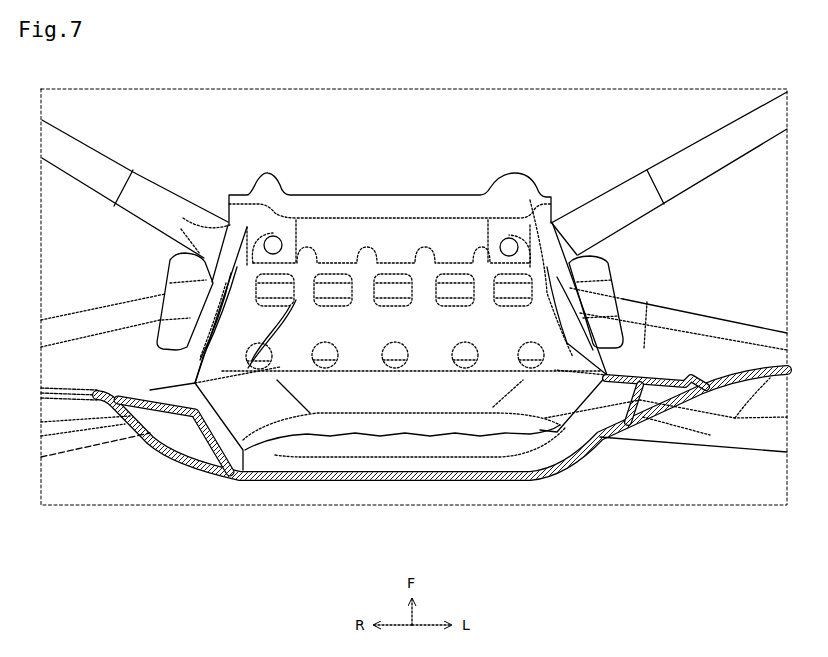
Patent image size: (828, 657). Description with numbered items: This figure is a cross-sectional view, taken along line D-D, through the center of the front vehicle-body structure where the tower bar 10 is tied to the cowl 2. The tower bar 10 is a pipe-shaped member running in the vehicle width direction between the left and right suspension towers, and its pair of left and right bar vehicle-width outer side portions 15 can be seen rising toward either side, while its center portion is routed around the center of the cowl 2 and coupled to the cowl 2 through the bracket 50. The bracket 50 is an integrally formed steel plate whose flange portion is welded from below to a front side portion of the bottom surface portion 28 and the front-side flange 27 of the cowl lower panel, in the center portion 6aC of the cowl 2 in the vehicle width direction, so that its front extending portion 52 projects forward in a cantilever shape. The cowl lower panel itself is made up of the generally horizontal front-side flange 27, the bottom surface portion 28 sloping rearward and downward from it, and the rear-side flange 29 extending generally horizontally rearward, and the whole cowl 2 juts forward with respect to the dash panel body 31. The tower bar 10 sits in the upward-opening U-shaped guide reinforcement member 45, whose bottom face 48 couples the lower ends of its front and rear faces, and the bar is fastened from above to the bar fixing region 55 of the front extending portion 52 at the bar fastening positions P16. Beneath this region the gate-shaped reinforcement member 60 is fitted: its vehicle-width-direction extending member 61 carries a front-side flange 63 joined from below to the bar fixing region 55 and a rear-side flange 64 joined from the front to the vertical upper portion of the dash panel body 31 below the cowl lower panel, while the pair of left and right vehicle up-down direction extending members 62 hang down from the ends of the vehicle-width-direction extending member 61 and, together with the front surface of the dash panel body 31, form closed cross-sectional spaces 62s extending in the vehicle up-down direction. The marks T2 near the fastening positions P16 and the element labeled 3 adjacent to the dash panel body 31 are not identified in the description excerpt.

The cowl 2 is at (712, 310).
The front cross member 3 is at (387, 486).
The center portion of the windshield lower edge 6aC is at (410, 165).
The tower bar 10 is at (121, 166).
The bar vehicle-width outer side portions 15 is at (70, 137).
The front-side flange 27 is at (745, 333).
The bottom surface portion 28 is at (648, 302).
The rear-side flange 29 is at (773, 442).
The dash panel body 31 is at (322, 484).
The guide reinforcement member 45 is at (600, 200).
The bottom face 48 is at (638, 192).
The bracket 50 is at (370, 193).
The front extending portion 52 is at (410, 197).
The bar fixing region 55 is at (334, 193).
The gate-shaped reinforcement member 60 is at (414, 308).
The vehicle-width-direction extending member 61 is at (305, 193).
The vehicle up-down direction extending members 62 is at (200, 452).
The closed cross-sectional spaces 62s is at (181, 441).
The front-side flange 63 is at (478, 226).
The rear-side flange 64 is at (440, 423).
The bar fastening positions P16 is at (273, 235).
The tangent line T2 is at (284, 246).